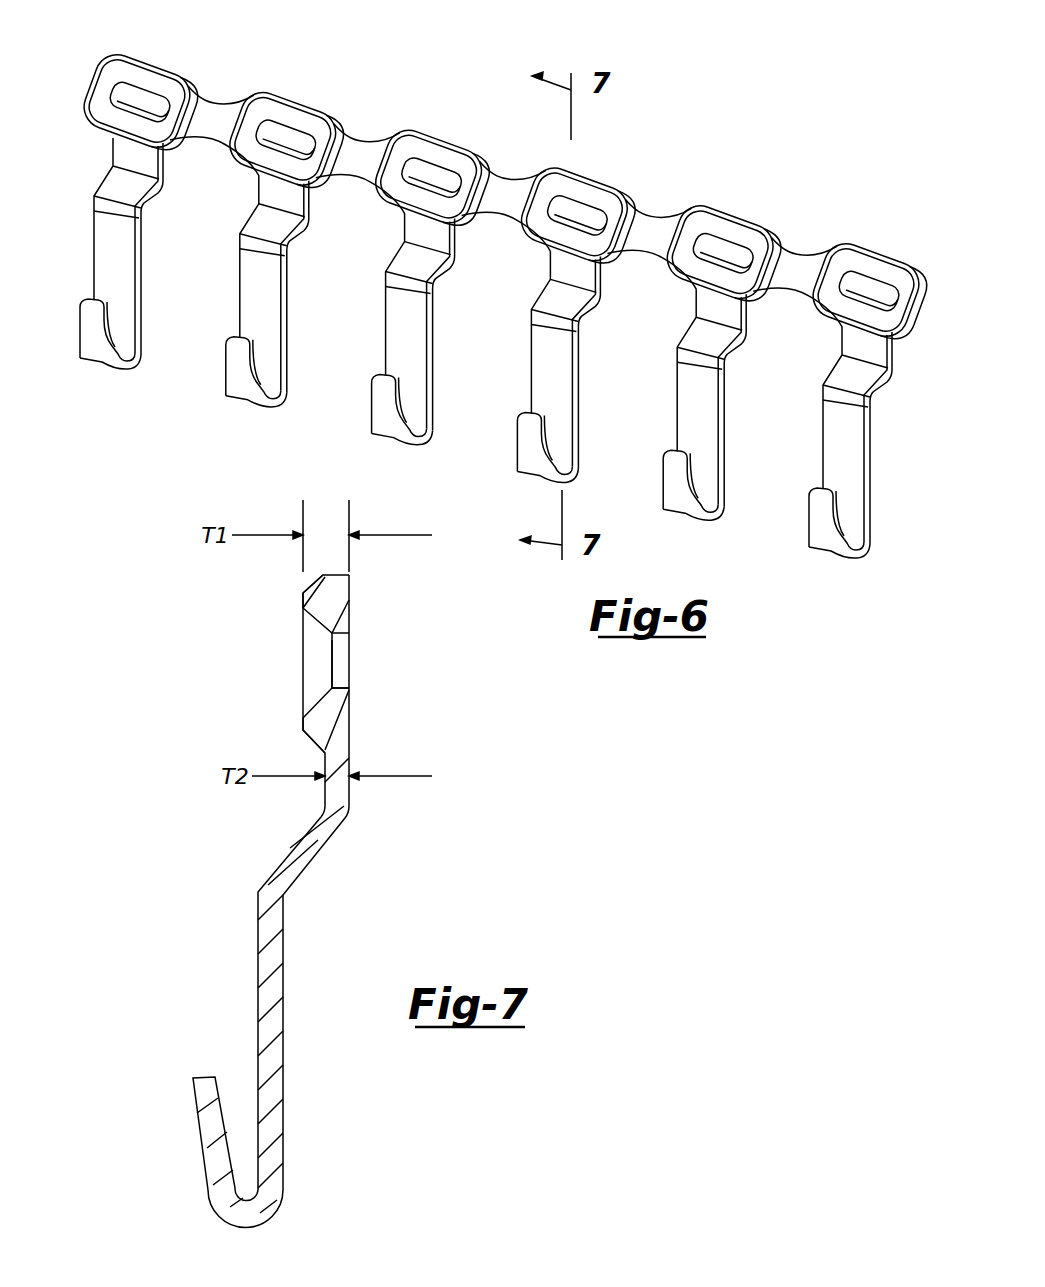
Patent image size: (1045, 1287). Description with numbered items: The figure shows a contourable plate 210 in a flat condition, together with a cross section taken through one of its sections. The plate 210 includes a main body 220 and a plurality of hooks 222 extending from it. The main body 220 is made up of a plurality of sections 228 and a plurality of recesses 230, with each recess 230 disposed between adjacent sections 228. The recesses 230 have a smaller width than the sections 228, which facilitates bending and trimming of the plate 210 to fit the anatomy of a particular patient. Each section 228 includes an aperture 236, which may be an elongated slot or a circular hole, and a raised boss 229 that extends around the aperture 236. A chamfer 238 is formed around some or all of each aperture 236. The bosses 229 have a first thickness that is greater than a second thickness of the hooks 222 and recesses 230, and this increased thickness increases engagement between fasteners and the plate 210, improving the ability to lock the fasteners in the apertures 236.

In FIG. 6, the plate 210 is at (702, 80).
In FIG. 6, the main body 220 is at (290, 93).
In FIG. 7, the main body 220 is at (352, 577).
In FIG. 6, the hooks 222 is at (100, 358).
In FIG. 7, the hooks 222 is at (286, 1194).
In FIG. 6, the sections 228 is at (471, 307).
In FIG. 7, the sections 228 is at (350, 603).
In FIG. 6, the raised boss 229 is at (92, 72).
In FIG. 7, the raised boss 229 is at (305, 718).
In FIG. 6, the recesses 230 is at (215, 101).
In FIG. 6, the aperture 236 is at (128, 103).
In FIG. 7, the aperture 236 is at (346, 688).
In FIG. 6, the chamfer 238 is at (100, 95).
In FIG. 7, the chamfer 238 is at (318, 630).